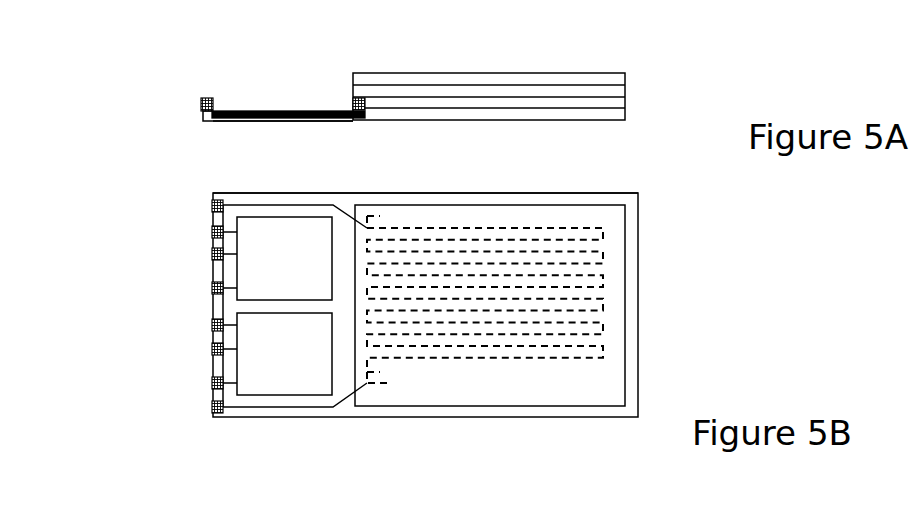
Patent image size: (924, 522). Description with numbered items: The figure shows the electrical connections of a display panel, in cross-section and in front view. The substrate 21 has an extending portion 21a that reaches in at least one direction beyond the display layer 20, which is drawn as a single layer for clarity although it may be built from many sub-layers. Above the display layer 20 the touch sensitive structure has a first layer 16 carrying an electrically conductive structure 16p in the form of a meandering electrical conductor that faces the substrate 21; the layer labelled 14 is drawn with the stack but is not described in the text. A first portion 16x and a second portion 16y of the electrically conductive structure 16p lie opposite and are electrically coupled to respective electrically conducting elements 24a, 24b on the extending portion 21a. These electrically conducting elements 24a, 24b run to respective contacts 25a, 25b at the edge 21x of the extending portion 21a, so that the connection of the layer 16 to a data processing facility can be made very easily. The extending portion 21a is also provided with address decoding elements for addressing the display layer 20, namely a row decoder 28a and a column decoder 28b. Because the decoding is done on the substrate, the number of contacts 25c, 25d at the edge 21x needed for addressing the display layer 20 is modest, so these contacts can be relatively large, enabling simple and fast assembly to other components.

In FIG. 5A, the membrane layer 14 is at (608, 72).
In FIG. 5B, the membrane layer 14 is at (533, 406).
In FIG. 5A, the first layer 16 is at (625, 98).
In FIG. 5B, the first portion of the electrically conductive pattern 16x is at (457, 165).
In FIG. 5A, the second portion of the electrically conductive pattern 16y is at (456, 34).
In FIG. 5B, the second portion of the electrically conductive pattern 16y is at (375, 392).
In FIG. 5B, the electrically conductive structure 16p is at (603, 228).
In FIG. 5A, the display layer 20 is at (625, 108).
In FIG. 5A, the substrate 21 is at (616, 124).
In FIG. 5B, the substrate 21 is at (598, 186).
In FIG. 5A, the extending portion 21a is at (262, 122).
In FIG. 5B, the extending portion 21a is at (297, 193).
In FIG. 5A, the edge 21x is at (202, 122).
In FIG. 5B, the edge 21x is at (213, 275).
In FIG. 5A, the electrically conducting element 24a is at (308, 110).
In FIG. 5B, the electrically conducting element 24a is at (250, 206).
In FIG. 5B, the electrically conducting element 24b is at (287, 408).
In FIG. 5A, the contact 25a is at (204, 97).
In FIG. 5B, the contact 25a is at (212, 407).
In FIG. 5B, the contact 25b is at (213, 204).
In FIG. 5B, the contacts 25c is at (192, 218).
In FIG. 5B, the contacts 25d is at (192, 313).
In FIG. 5B, the row decoder 28a is at (277, 258).
In FIG. 5B, the column decoder 28b is at (277, 354).